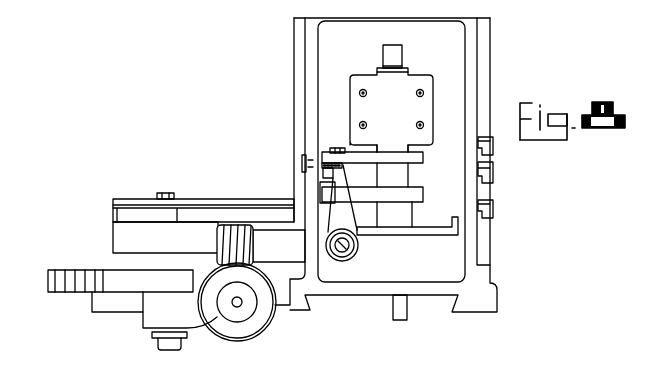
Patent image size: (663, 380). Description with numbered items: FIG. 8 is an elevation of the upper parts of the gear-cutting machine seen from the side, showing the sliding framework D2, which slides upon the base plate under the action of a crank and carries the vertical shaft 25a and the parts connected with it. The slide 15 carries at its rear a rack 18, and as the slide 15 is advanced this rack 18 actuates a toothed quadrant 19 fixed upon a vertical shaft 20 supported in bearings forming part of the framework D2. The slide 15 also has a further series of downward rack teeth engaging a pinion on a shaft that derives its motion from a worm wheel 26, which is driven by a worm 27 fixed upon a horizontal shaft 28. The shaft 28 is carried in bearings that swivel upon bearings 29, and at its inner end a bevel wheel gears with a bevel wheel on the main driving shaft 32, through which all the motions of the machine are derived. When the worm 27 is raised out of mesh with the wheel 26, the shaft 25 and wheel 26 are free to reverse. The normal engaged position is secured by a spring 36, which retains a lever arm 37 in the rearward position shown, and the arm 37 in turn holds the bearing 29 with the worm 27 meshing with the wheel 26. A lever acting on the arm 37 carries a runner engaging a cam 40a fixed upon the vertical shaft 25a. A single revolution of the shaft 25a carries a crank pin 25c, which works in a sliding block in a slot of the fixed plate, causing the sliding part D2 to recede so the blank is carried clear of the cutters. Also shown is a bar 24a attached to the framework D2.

The framework D2 is at (508, 67).
The slide 15 is at (190, 215).
The rack 18 is at (48, 279).
The toothed quadrant 19 is at (118, 278).
The vertical shaft 20 is at (158, 195).
The bar 24a is at (403, 195).
The shaft 25 is at (238, 306).
The vertical shaft 25a is at (390, 62).
The crank pin 25c is at (407, 310).
The worm wheel 26 is at (223, 325).
The worm 27 is at (227, 225).
The horizontal shaft 28 is at (215, 243).
The bearings 29 is at (322, 252).
The main driving shaft 32 is at (352, 252).
The spring 36 is at (328, 145).
The lever arm 37 is at (342, 208).
The cam 40a is at (407, 156).